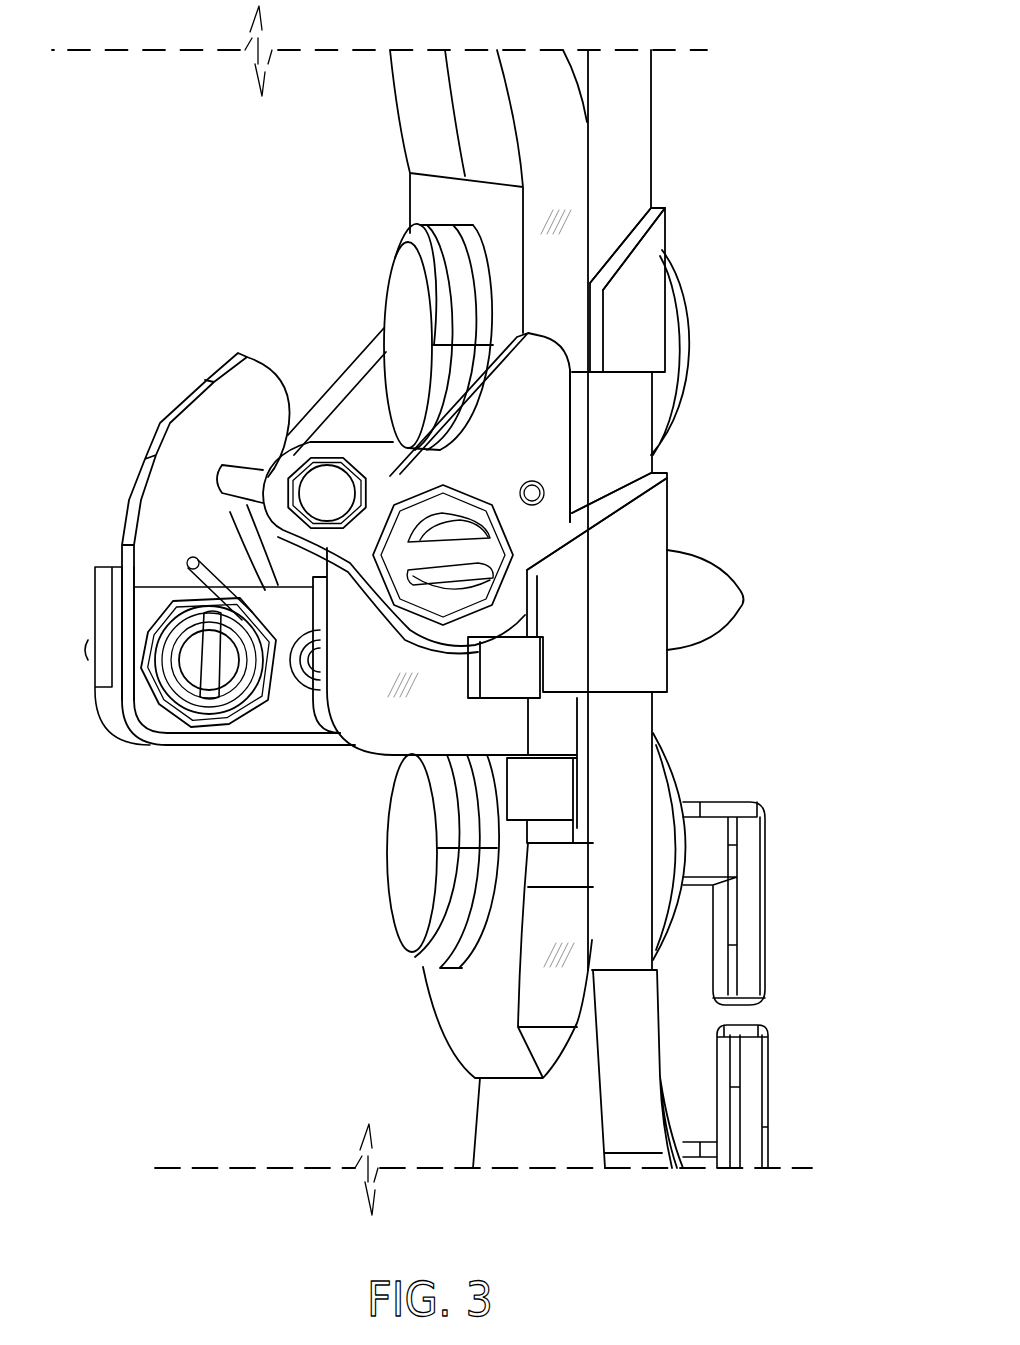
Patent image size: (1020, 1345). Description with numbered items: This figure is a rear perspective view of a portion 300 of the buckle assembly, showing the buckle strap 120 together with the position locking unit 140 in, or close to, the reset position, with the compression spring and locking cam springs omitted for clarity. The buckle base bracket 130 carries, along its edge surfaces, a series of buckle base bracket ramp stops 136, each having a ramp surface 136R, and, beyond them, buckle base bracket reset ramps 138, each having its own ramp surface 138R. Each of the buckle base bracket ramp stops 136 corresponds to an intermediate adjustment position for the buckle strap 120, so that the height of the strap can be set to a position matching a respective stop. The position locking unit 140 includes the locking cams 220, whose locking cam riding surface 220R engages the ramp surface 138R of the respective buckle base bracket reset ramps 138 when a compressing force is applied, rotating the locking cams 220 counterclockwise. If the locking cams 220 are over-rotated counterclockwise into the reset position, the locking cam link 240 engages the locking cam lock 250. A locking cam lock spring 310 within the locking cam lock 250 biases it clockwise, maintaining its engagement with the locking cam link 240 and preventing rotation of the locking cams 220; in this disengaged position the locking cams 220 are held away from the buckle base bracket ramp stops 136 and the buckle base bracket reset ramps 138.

The portion 300 is at (796, 100).
The buckle strap 120 is at (405, 118).
The buckle base bracket 130 is at (640, 140).
The buckle base bracket ramp stops 136 is at (652, 333).
The ramp surface 136R is at (645, 228).
The buckle base bracket reset ramps 138 is at (632, 605).
The ramp surface 138R is at (633, 487).
The position locking unit 140 is at (266, 262).
The locking cams 220 is at (525, 445).
The locking cam riding surface 220R is at (573, 452).
The locking cam link 240 is at (233, 483).
The locking cam lock 250 is at (210, 379).
The locking cam lock spring 310 is at (203, 735).